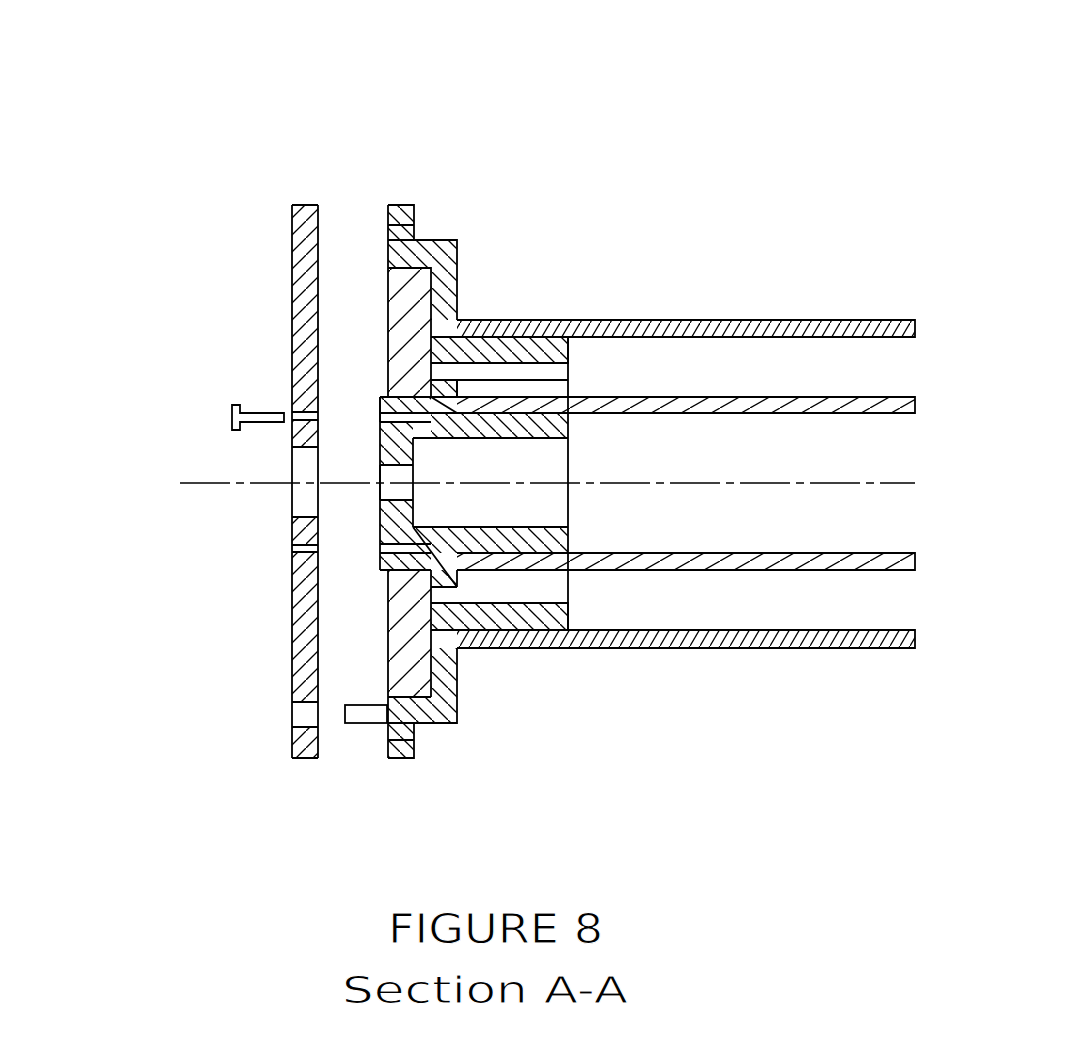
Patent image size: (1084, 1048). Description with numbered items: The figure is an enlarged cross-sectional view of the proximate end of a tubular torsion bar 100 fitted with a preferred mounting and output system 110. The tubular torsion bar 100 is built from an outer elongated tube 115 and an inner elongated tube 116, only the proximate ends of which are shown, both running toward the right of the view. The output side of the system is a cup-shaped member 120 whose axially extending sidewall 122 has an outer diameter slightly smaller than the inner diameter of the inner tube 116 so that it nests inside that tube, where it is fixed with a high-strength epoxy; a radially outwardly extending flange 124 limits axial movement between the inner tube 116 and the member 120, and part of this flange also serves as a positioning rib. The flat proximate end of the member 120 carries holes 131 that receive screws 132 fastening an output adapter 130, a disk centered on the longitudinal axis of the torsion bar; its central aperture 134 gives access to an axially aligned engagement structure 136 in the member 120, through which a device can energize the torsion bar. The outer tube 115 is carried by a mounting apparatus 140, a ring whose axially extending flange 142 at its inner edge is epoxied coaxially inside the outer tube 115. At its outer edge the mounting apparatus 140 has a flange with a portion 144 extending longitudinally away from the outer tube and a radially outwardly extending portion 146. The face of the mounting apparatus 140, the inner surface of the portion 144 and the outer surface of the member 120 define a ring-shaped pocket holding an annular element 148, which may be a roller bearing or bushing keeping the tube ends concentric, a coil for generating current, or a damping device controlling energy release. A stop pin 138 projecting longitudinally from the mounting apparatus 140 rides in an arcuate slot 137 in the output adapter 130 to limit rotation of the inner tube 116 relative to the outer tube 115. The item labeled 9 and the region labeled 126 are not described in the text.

The tubular torsion bar 100 is at (494, 422).
The mounting and output system 110 is at (494, 463).
The cap 9 is at (451, 213).
The outer elongated tube 115 is at (686, 454).
The inner elongated tube 116 is at (686, 483).
The cup-shaped member 120 is at (431, 481).
The sidewall 122 is at (570, 443).
The radially outwardly extending flange 124 is at (569, 371).
The lower hub section 126 is at (532, 646).
The output adapter 130 is at (203, 481).
The holes 131 is at (299, 358).
The screws 132 is at (205, 384).
The central aperture 134 is at (203, 463).
The engagement structure 136 is at (274, 508).
The arcuate slot 137 is at (238, 696).
The stop pin 138 is at (291, 762).
The mounting apparatus 140 is at (486, 318).
The axially extending flange 142 is at (577, 267).
The longitudinally extending flange portion 144 is at (500, 708).
The radially outwardly extending flange portion 146 is at (474, 704).
The annular element 148 is at (363, 261).